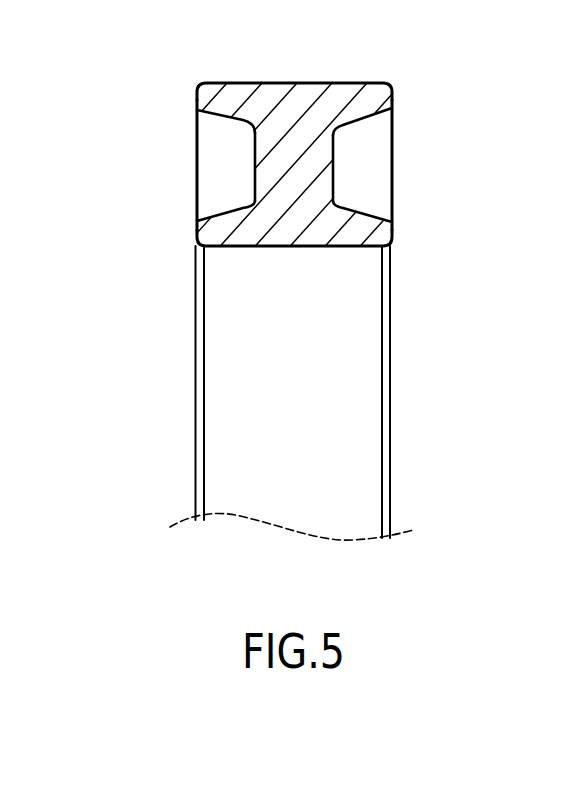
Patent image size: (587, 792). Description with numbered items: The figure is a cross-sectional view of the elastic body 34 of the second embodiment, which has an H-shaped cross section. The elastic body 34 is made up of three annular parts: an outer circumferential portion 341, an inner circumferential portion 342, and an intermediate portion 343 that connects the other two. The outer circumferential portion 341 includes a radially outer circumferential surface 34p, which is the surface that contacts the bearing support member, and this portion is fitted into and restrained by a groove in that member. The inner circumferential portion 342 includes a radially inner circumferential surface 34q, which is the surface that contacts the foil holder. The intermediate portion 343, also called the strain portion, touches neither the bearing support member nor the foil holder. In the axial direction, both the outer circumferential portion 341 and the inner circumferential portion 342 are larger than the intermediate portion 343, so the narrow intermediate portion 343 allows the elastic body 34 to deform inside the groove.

The elastic body 34 is at (287, 166).
The outer circumferential portion 341 is at (205, 100).
The inner circumferential portion 342 is at (234, 226).
The intermediate portion 343 is at (287, 166).
The radially outer circumferential surface 34p is at (343, 83).
The radially inner circumferential surface 34q is at (338, 250).